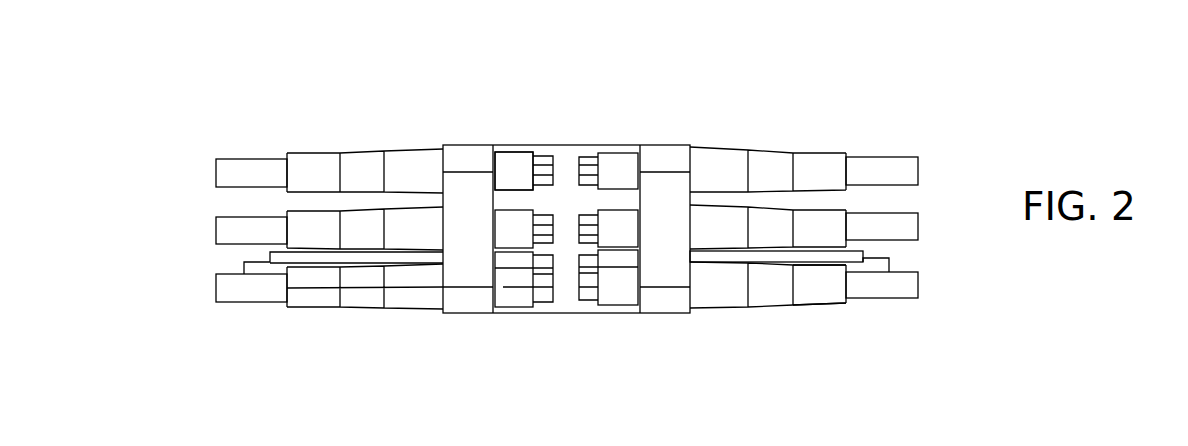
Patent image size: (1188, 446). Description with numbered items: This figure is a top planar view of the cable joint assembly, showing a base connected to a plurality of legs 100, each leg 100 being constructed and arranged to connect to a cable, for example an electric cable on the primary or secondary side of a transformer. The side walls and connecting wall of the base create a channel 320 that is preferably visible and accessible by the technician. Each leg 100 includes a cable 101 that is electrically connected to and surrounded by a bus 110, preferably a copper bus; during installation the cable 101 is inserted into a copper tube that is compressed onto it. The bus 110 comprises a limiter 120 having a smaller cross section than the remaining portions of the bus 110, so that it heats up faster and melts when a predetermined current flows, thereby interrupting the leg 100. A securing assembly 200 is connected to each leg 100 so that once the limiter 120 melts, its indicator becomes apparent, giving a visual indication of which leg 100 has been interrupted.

The leg 100 is at (737, 342).
The cable 101 is at (898, 292).
The bus 110 is at (812, 305).
The limiter 120 is at (360, 300).
The securing assembly 200 is at (512, 160).
The channel 320 is at (565, 280).